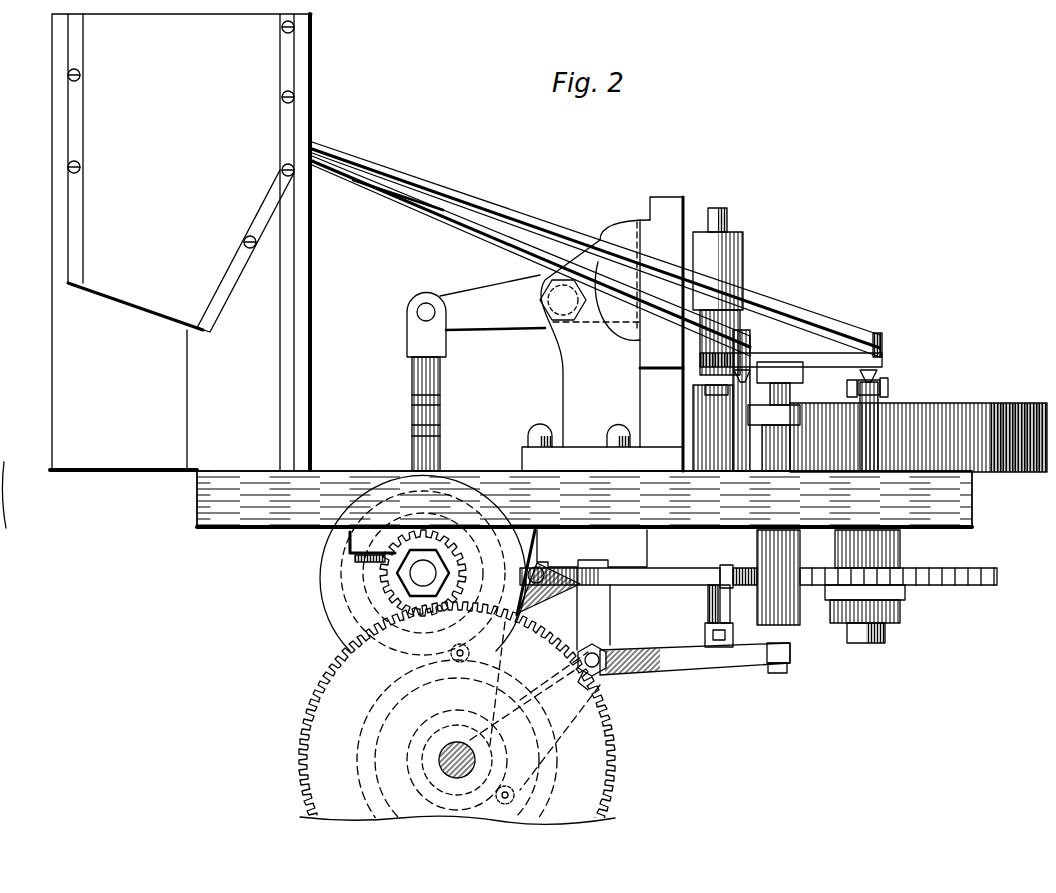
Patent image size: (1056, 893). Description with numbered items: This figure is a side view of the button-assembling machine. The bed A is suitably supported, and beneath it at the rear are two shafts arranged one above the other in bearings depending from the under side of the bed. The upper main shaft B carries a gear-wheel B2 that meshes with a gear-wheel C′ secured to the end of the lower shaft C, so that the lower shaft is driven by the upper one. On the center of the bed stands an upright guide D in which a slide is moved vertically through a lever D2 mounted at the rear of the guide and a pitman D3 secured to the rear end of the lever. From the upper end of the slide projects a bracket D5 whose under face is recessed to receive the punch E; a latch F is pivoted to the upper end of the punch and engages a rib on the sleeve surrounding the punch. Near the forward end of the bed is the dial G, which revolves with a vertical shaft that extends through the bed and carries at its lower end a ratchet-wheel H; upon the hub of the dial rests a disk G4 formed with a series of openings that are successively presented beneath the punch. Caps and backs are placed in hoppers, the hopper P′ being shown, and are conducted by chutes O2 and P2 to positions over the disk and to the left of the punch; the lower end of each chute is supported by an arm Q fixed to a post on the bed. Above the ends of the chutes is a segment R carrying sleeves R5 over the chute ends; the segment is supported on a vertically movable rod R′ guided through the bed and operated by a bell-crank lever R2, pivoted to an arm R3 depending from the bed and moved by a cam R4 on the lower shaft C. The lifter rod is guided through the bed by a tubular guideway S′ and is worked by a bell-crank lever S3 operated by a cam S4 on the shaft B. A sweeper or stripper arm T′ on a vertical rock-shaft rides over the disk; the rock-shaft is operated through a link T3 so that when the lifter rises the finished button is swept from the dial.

The hopper P′ is at (181, 270).
The chute P2 is at (495, 214).
The chute O2 is at (470, 232).
The punch E is at (772, 318).
The latch F is at (744, 332).
The lever D2 is at (496, 316).
The pitman D3 is at (412, 382).
The upright guide D is at (602, 334).
The bracket D5 is at (745, 262).
The segment R is at (803, 360).
The sleeves R5 is at (876, 375).
The arm Q is at (710, 386).
The sweeper or stripper arm T′ is at (700, 400).
The disk G4 is at (805, 408).
The dial G is at (918, 410).
The vertically-movable rod R′ is at (733, 430).
The bed A is at (584, 489).
The main shaft B is at (423, 573).
The gear-wheel B2 is at (400, 590).
The cam S4 is at (456, 645).
The gear-wheel C′ is at (457, 731).
The lower shaft C is at (440, 760).
The cam R4 is at (570, 770).
The arm R3 is at (596, 622).
The link T3 is at (642, 580).
The bell-crank lever S3 is at (675, 578).
The tubular guideway S′ is at (705, 612).
The bell-crank lever R2 is at (697, 668).
The ratchet-wheel H is at (948, 558).